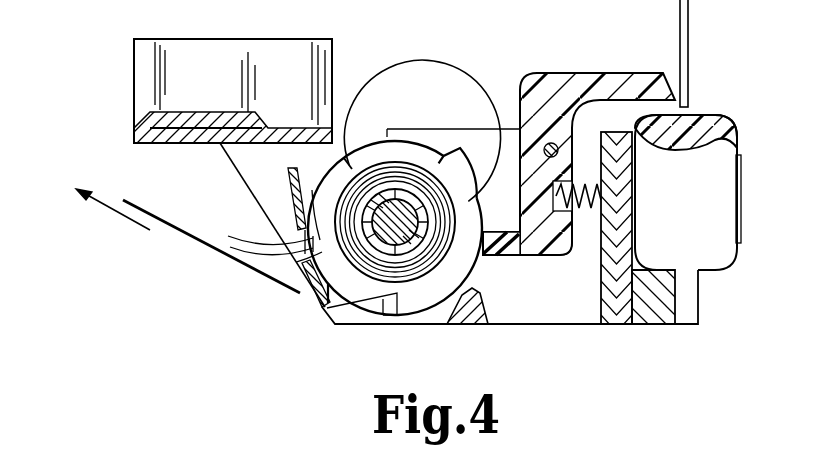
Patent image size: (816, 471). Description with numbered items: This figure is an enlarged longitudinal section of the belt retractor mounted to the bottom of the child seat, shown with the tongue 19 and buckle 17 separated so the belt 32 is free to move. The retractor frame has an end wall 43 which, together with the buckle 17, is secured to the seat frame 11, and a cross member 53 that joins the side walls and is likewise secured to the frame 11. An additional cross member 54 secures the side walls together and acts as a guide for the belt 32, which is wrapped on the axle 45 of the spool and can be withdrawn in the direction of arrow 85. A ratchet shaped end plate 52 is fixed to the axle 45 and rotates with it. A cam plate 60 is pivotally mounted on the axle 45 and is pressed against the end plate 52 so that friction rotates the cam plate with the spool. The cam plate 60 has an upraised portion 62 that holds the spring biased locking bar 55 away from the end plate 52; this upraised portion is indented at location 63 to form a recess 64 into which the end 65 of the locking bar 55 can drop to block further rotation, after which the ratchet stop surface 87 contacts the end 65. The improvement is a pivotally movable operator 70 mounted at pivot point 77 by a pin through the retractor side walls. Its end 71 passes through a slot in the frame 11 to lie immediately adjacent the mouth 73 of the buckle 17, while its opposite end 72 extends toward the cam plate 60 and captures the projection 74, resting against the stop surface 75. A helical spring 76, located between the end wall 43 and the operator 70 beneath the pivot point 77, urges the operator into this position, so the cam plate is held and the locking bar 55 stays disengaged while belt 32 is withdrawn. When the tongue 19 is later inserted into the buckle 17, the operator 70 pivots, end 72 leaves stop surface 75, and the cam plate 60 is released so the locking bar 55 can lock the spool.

The frame 11 is at (660, 323).
The buckle 17 is at (736, 131).
The tongue 19 is at (689, 26).
The belt 32 is at (176, 233).
The end wall 43 is at (613, 328).
The axle 45 is at (399, 212).
The ratchet shaped end plate 52 is at (391, 150).
The cross member 53 is at (208, 122).
The cross member 54 is at (313, 291).
The locking bar 55 is at (289, 206).
The cam plate 60 is at (460, 157).
The upraised portion 62 is at (312, 190).
The indented location 63 is at (268, 243).
The recess 64 is at (312, 262).
The end of locking bar 65 is at (280, 247).
The operator 70 is at (566, 118).
The end of operator 71 is at (626, 80).
The end of operator 72 is at (551, 257).
The mouth 73 is at (699, 110).
The projection 74 is at (496, 207).
The stop surface 75 is at (500, 248).
The helical spring 76 is at (587, 212).
The pivot point 77 is at (548, 143).
The arrow 85 is at (119, 220).
The ratchet stop surface 87 is at (295, 262).